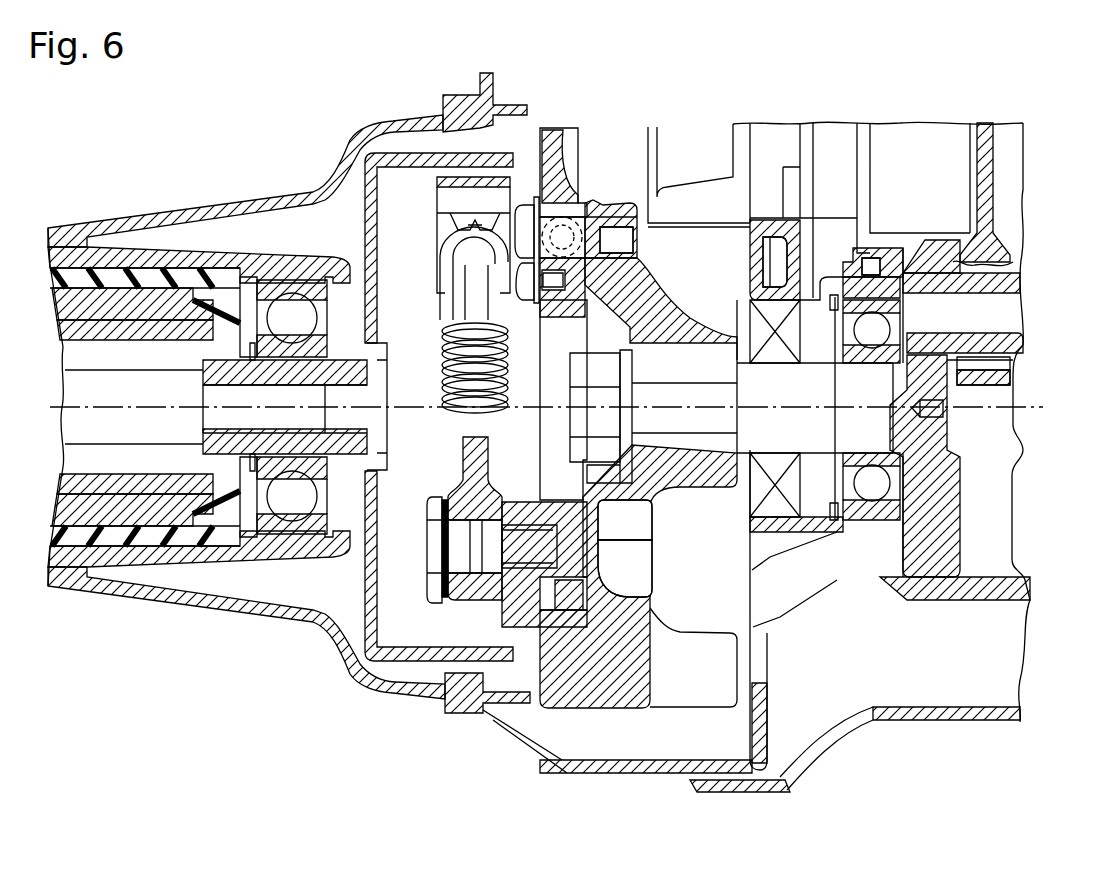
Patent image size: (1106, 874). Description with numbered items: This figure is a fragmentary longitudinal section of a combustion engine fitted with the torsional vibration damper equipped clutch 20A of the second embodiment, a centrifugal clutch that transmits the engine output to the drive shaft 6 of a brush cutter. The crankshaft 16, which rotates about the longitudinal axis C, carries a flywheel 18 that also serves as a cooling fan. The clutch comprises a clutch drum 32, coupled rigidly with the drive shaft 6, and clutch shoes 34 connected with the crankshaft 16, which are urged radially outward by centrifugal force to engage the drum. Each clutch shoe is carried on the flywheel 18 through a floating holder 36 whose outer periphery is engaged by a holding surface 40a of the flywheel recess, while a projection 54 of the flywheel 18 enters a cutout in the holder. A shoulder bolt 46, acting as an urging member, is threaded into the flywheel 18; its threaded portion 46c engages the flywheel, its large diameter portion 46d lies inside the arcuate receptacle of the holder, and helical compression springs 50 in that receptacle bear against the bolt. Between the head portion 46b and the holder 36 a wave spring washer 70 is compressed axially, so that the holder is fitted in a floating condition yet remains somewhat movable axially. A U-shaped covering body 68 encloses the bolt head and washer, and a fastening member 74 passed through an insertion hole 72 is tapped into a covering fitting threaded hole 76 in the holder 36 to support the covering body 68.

The drive shaft 6 is at (125, 393).
The crankshaft 16 is at (815, 408).
The flywheel 18 is at (808, 303).
The torsional vibration damper equipped clutch 20A is at (341, 139).
The clutch drum 32 is at (404, 160).
The clutch shoe 34 is at (428, 262).
The floating holder 36 is at (463, 683).
The holding surface 40a is at (580, 218).
The shoulder bolt 46 is at (523, 195).
The head portion 46b is at (517, 210).
The threaded portion 46c is at (612, 237).
The large diameter portion 46d is at (562, 217).
The helical compression spring 50 is at (605, 207).
The projection 54 is at (526, 590).
The covering body 68 is at (536, 303).
The wave spring washer 70 is at (541, 217).
The insertion hole 72 is at (522, 278).
The fastening member 74 is at (512, 312).
The covering fitting threaded hole 76 is at (623, 278).
The longitudinal axis C is at (1020, 413).